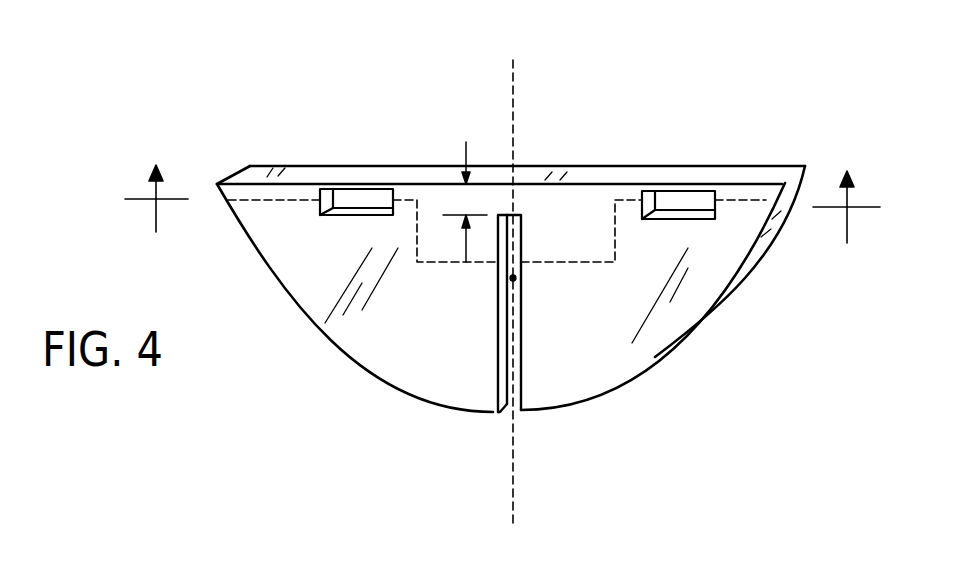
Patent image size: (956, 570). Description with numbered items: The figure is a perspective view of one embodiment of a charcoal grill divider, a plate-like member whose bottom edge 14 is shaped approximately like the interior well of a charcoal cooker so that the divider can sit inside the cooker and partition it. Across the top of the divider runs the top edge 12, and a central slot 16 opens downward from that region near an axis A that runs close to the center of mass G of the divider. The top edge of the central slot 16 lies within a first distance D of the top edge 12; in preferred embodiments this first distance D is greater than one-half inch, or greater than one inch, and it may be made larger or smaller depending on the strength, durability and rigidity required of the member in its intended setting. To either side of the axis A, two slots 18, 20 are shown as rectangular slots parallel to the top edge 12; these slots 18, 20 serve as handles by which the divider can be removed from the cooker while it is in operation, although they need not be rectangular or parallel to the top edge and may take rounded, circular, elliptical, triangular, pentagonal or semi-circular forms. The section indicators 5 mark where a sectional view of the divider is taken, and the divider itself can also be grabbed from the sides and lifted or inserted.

The section line 5- 5 is at (502, 182).
The top edge 12 is at (615, 170).
The bottom edge 14 is at (748, 268).
The central slot 16 is at (518, 413).
The slot 18 is at (363, 189).
The slot 20 is at (680, 191).
The axis A is at (514, 110).
The first distance D is at (465, 202).
The center of mass G is at (514, 279).